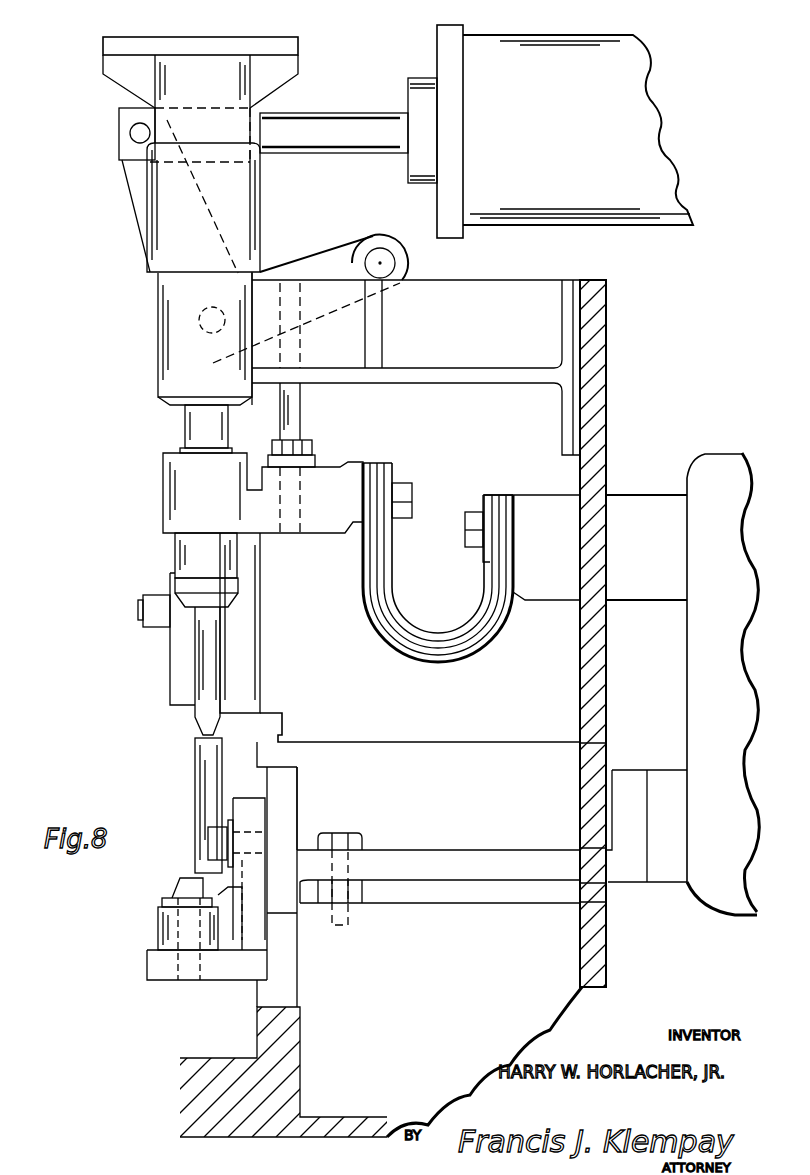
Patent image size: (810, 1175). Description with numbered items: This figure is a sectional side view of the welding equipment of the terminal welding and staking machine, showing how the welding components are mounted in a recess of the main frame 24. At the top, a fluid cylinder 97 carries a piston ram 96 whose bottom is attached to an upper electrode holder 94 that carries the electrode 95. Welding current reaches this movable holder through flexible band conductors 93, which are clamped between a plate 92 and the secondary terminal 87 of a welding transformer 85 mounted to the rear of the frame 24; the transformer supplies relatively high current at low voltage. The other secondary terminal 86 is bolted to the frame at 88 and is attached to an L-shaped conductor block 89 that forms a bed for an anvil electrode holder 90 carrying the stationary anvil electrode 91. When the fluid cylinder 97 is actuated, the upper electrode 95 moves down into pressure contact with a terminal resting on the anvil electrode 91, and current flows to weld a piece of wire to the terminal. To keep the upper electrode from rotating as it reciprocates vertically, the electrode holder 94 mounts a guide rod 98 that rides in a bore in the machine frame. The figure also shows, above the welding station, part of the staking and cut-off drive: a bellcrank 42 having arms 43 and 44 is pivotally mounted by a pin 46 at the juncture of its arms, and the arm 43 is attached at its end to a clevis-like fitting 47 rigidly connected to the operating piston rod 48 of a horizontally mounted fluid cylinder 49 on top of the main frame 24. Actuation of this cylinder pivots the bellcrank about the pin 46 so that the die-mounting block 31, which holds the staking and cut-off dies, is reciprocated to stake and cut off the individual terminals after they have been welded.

The main frame 24 is at (594, 965).
The die-mounting block 31 is at (185, 642).
The bellcrank 42 is at (198, 304).
The bellcrank arm 43 is at (140, 192).
The bellcrank arm 44 is at (355, 255).
The pin 46 is at (180, 347).
The clevis-like fitting 47 is at (217, 128).
The operating piston rod 48 is at (359, 122).
The fluid cylinder 49 is at (657, 125).
The transformer 85 is at (707, 478).
The secondary terminal 86 is at (487, 860).
The secondary terminal 87 is at (533, 522).
The bolt connection 88 is at (346, 845).
The L-shaped conductor block 89 is at (162, 975).
The anvil electrode holder 90 is at (172, 928).
The anvil electrode 91 is at (210, 780).
The plate 92 is at (484, 500).
The flexible band conductors 93 is at (398, 646).
The upper electrode holder 94 is at (196, 560).
The electrode 95 is at (205, 680).
The piston ram 96 is at (200, 421).
The fluid cylinder 97 is at (172, 242).
The guide rod 98 is at (292, 428).